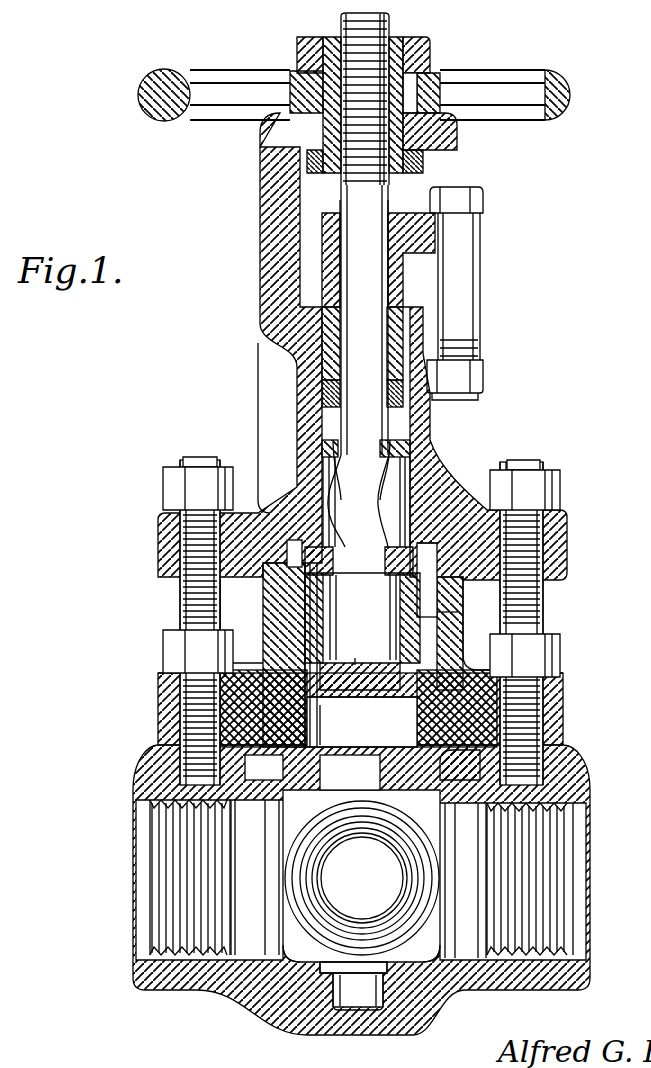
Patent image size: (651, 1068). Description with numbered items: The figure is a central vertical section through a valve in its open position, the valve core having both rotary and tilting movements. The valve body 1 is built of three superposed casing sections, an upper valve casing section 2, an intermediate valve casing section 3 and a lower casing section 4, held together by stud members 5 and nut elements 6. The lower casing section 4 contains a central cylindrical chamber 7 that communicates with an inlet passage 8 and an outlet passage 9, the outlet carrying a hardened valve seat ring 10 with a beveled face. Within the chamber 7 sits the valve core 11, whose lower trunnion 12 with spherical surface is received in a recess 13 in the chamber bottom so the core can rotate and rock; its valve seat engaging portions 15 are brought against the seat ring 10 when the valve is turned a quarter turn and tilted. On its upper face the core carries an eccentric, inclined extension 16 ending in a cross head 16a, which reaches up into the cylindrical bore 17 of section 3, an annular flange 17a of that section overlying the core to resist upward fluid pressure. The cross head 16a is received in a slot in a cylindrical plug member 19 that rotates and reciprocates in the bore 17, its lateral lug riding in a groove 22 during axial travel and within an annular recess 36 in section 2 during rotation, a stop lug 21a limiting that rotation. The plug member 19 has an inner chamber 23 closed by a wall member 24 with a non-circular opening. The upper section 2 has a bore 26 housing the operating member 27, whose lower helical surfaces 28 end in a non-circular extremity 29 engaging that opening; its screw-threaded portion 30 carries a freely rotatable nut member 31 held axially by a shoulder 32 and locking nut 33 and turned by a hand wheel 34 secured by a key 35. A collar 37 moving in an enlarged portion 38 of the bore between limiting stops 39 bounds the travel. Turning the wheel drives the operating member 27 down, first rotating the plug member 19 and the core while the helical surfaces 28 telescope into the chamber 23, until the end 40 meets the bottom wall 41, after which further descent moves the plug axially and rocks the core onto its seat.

The valve body 1 is at (575, 777).
The upper valve casing section 2 is at (567, 565).
The intermediate valve casing section 3 is at (160, 510).
The lower casing section 4 is at (258, 437).
The stud members 5 is at (180, 607).
The nut elements 6 is at (163, 478).
The central cylindrical chamber 7 is at (358, 879).
The inlet passage 8 is at (133, 857).
The outlet passage 9 is at (590, 860).
The valve seat ring 10 is at (426, 944).
The valve core 11 is at (299, 945).
The trunnion 12 is at (320, 408).
The recess 13 is at (355, 1028).
The valve seat engaging portions 15 is at (400, 850).
The extension 16 is at (322, 770).
The cross head 16a is at (348, 742).
The cylindrical bore 17 is at (440, 768).
The annular flange 17a is at (264, 767).
The cylindrical plug member 19 is at (405, 640).
The stop lug 21a is at (292, 540).
The groove 22 is at (437, 612).
The inner chamber 23 is at (362, 631).
The wall member 24 is at (268, 586).
The bore 26 is at (320, 390).
The operating member 27 is at (340, 197).
The helical surfaces 28 is at (359, 493).
The non-circular extremity 29 is at (385, 547).
The screw-threaded portion 30 is at (393, 22).
The nut member 31 is at (423, 160).
The shoulder 32 is at (457, 137).
The locking nut 33 is at (428, 42).
The hand wheel 34 is at (596, 97).
The key 35 is at (440, 74).
The annular recess 36 is at (428, 555).
The collar 37 is at (322, 447).
The enlarged portion of bore 38 is at (410, 458).
The limiting stops 39 is at (412, 497).
The end of operating member 40 is at (363, 617).
The bottom wall 41 is at (364, 651).